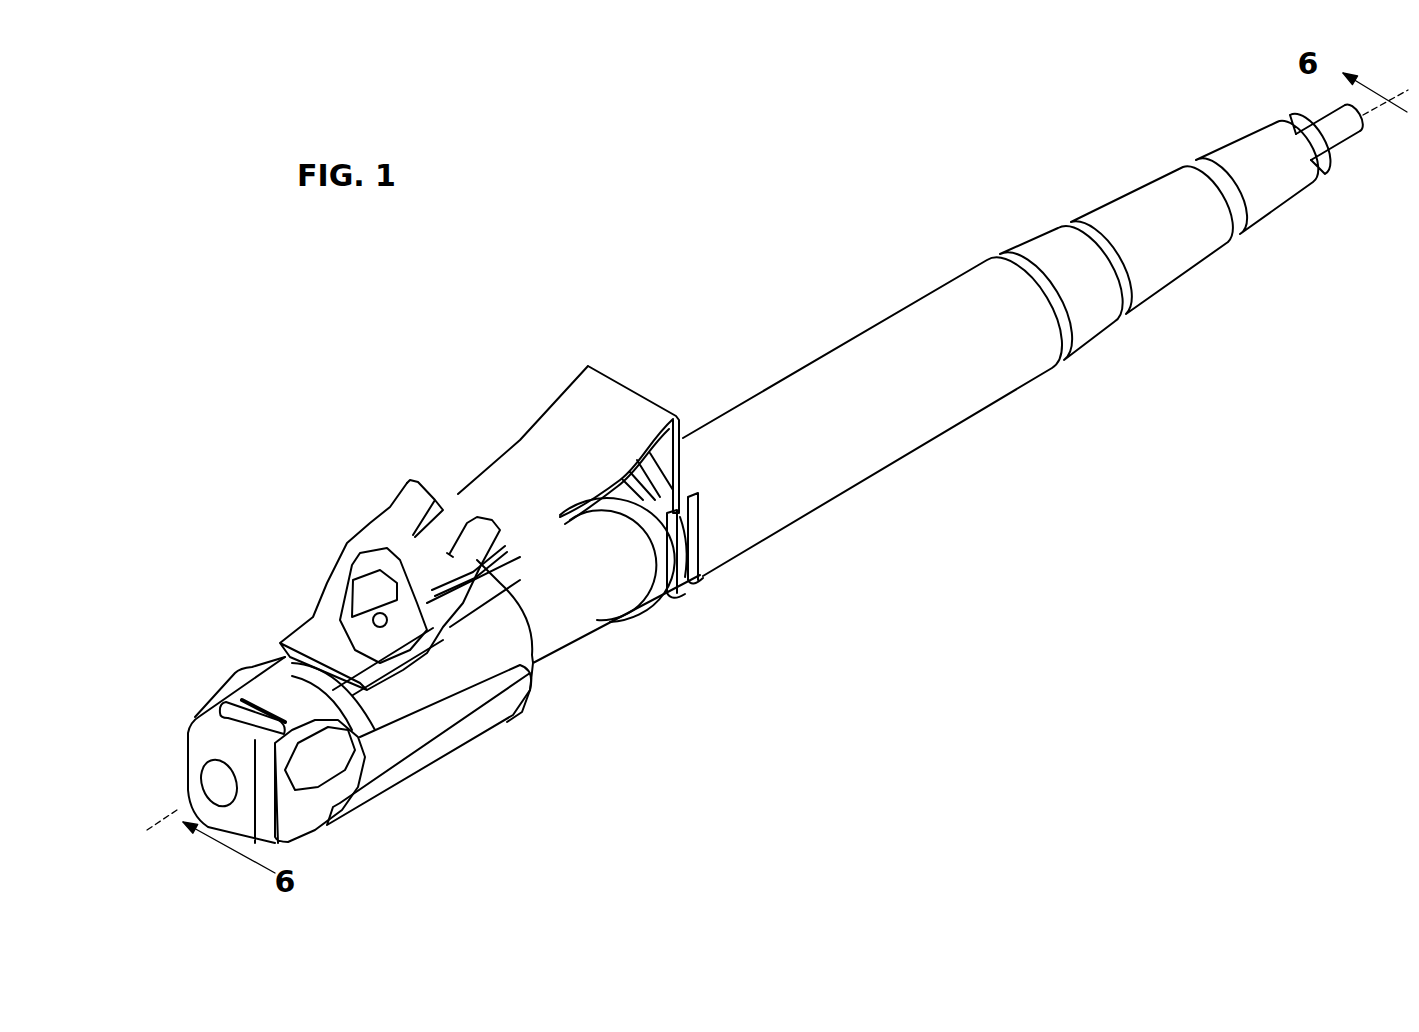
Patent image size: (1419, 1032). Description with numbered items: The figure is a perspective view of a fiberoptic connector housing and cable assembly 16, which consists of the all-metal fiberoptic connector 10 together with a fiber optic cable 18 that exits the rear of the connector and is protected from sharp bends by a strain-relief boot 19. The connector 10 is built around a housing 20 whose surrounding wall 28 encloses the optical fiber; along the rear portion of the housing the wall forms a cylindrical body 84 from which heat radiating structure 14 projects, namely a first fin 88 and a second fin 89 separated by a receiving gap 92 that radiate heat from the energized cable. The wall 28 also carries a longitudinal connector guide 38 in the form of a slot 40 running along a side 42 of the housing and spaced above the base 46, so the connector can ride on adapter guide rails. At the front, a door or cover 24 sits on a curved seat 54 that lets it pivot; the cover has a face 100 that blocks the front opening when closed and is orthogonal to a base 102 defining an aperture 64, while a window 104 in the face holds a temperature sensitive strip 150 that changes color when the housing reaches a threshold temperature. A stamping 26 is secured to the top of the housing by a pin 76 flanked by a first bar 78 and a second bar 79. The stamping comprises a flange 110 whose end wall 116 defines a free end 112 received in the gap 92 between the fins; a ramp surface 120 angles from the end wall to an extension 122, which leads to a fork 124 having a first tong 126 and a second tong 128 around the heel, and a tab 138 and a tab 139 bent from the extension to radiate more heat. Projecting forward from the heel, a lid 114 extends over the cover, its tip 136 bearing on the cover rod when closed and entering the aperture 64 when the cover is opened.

The fiberoptic connector 10 is at (274, 516).
The heat radiating structure 14 is at (636, 364).
The fiberoptic connector housing and cable assembly 16 is at (733, 290).
The fiber optic cable 18 is at (1343, 137).
The strain-relief boot 19 is at (1107, 200).
The housing 20 is at (547, 662).
The cover 24 is at (190, 720).
The stamping 26 is at (515, 442).
The surrounding wall 28 is at (570, 650).
The longitudinal connector guide 38 is at (396, 816).
The slot 40 is at (412, 748).
The side 42 is at (443, 747).
The base 46 is at (485, 733).
The curved seat 54 is at (317, 813).
The aperture 64 is at (250, 712).
The pin 76 is at (372, 627).
The first bar 78 is at (410, 660).
The second bar 79 is at (368, 585).
The cylindrical body 84 is at (583, 637).
The first fin 88 is at (662, 597).
The second fin 89 is at (692, 577).
The receiving gap 92 is at (683, 583).
The face 100 is at (243, 813).
The base 102 is at (210, 703).
The window 104 is at (220, 808).
The flange 110 is at (550, 407).
The free end 112 is at (683, 437).
The lid 114 is at (267, 668).
The end wall 116 is at (677, 418).
The ramp surface 120 is at (584, 363).
The extension 122 is at (482, 462).
The fork 124 is at (367, 532).
The first tong 126 is at (328, 585).
The second tong 128 is at (427, 610).
The tip 136 is at (263, 707).
The tab 138 is at (488, 518).
The tab 139 is at (420, 482).
The temperature sensitive strip 150 is at (212, 782).